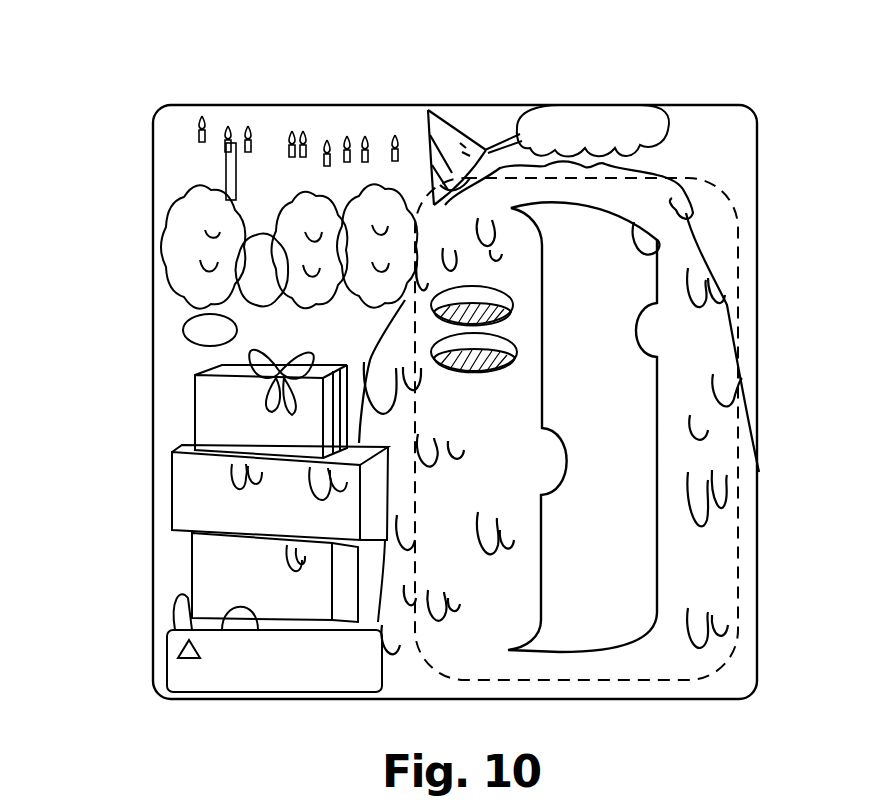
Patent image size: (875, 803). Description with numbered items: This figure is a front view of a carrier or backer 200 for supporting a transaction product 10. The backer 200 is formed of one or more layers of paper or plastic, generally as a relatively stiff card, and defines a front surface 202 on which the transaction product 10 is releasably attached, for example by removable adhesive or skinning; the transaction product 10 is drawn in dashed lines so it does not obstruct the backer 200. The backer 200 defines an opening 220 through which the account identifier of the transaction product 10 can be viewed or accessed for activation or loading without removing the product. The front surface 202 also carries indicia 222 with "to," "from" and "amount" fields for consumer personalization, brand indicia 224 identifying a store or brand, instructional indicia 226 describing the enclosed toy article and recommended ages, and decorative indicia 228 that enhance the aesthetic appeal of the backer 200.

The backer 200 is at (187, 72).
The front surface 202 is at (718, 120).
The opening 220 is at (658, 247).
The transaction product 10 is at (738, 305).
The decorative indicia 228 is at (422, 165).
The brand indicia 224 is at (183, 335).
The indicia 222 is at (193, 488).
The instructional indicia 226 is at (568, 113).